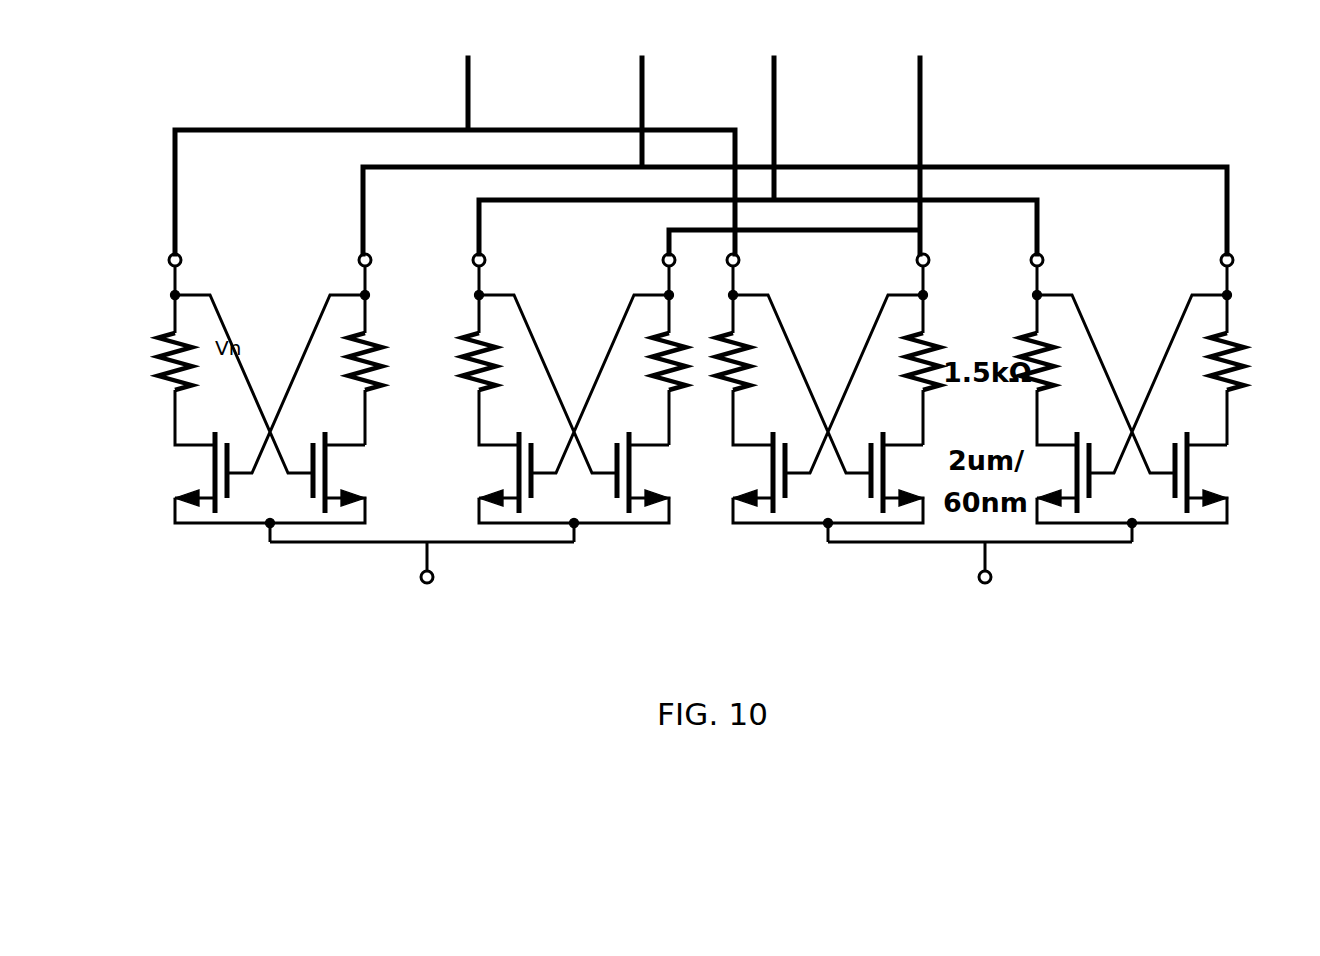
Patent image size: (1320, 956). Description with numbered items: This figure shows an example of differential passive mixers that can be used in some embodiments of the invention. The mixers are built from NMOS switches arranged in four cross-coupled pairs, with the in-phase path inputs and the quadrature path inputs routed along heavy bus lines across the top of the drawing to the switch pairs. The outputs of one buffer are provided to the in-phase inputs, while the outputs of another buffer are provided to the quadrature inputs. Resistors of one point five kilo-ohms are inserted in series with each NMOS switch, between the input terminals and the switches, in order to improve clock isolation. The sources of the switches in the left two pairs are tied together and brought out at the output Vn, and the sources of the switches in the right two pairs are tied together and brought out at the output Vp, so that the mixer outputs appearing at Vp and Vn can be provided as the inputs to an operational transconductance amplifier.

The output Vn is at (422, 588).
The output Vp is at (980, 588).